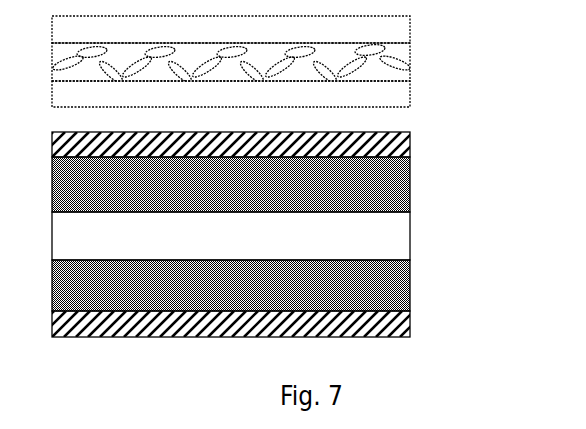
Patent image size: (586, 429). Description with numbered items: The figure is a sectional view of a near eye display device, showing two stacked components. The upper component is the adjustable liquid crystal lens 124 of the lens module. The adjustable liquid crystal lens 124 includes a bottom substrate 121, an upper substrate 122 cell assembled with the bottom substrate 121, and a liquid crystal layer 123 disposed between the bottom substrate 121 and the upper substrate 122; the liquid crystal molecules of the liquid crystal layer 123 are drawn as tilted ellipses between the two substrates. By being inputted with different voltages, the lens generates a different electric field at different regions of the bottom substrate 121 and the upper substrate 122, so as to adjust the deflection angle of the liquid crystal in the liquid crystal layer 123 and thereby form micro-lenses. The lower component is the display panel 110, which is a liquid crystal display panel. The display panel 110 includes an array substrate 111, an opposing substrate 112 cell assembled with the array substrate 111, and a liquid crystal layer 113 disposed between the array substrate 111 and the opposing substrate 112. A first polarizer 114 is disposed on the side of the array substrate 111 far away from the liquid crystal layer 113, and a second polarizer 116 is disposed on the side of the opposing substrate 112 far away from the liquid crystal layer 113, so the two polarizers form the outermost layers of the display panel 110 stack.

The display panel 110 is at (267, 236).
The array substrate 111 is at (372, 285).
The opposing substrate 112 is at (372, 184).
The liquid crystal layer 113 is at (372, 235).
The first polarizer 114 is at (241, 324).
The second polarizer 116 is at (383, 141).
The bottom substrate 121 is at (253, 95).
The upper substrate 122 is at (373, 30).
The liquid crystal layer 123 is at (373, 63).
The adjustable liquid crystal lens 124 is at (278, 63).